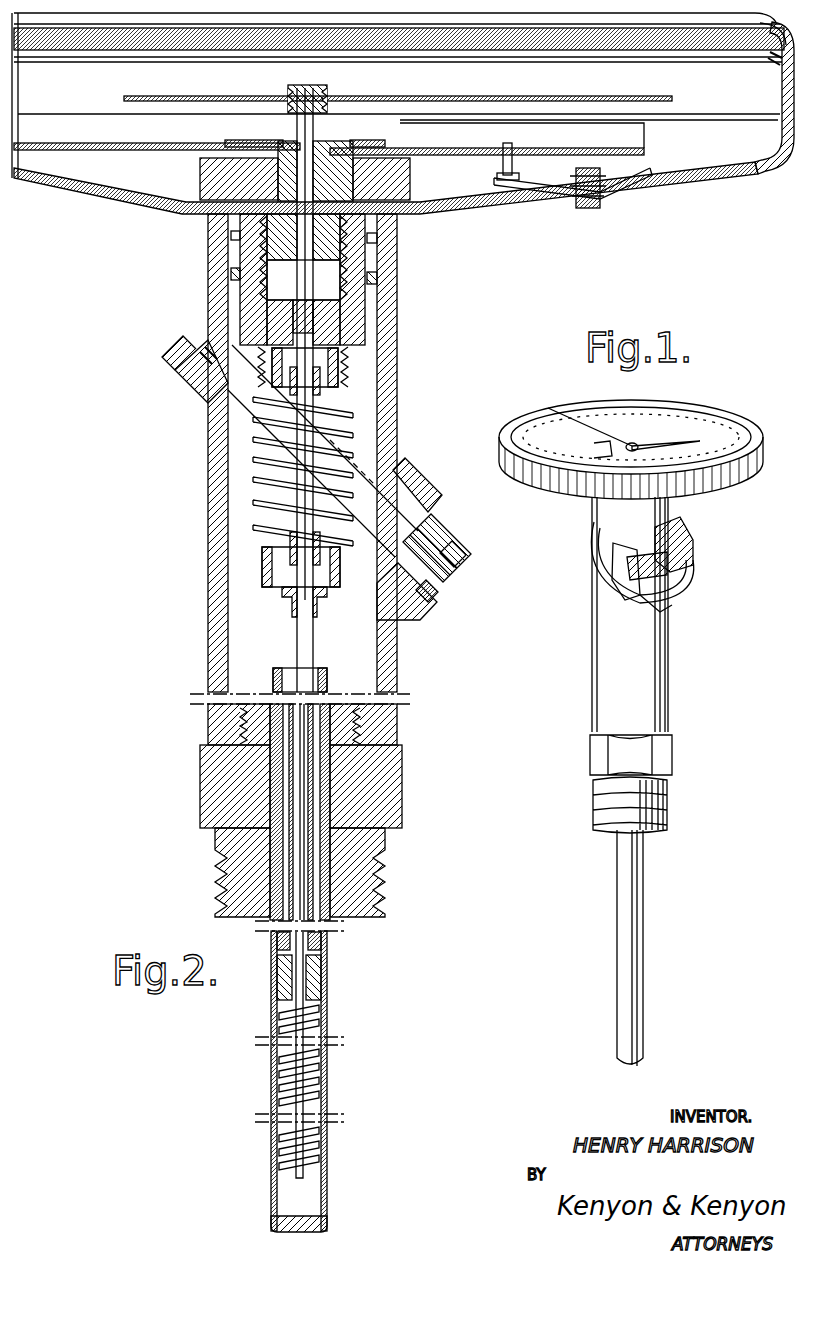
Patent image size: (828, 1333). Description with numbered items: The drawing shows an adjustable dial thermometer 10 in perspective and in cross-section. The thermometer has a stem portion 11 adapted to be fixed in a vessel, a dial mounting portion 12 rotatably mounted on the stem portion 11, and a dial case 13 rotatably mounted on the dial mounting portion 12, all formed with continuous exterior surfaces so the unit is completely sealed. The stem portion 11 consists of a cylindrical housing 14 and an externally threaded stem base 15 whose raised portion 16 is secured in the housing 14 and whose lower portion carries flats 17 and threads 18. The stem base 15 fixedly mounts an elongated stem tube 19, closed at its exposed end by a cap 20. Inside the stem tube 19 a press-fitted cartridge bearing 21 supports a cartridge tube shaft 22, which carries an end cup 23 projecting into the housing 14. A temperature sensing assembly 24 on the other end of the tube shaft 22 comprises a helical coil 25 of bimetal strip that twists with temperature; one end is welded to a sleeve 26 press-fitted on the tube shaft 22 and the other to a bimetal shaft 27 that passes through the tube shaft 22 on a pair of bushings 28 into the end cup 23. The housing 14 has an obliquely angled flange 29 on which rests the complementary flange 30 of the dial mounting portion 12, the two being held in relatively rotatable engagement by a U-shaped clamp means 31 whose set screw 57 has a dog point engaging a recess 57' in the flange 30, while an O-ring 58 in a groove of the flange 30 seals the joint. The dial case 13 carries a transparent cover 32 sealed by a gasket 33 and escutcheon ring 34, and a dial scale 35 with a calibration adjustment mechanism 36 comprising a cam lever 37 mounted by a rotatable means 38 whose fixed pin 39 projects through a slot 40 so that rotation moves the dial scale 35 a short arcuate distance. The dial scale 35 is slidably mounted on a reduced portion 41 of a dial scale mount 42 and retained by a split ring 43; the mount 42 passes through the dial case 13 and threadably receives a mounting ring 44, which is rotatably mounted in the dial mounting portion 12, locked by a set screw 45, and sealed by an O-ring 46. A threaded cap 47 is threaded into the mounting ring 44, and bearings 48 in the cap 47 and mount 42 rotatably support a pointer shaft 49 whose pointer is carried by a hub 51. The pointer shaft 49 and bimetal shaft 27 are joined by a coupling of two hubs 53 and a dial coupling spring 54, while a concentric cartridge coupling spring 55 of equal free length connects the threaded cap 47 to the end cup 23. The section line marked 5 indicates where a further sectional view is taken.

In FIG. 1, the adjustable dial thermometer 10 is at (588, 637).
In FIG. 2, the stem portion 11 is at (180, 648).
In FIG. 1, the stem portion 11 is at (590, 680).
In FIG. 2, the dial mounting portion 12 is at (198, 263).
In FIG. 1, the dial mounting portion 12 is at (654, 523).
In FIG. 2, the dial case 13 is at (78, 202).
In FIG. 1, the dial case 13 is at (729, 488).
In FIG. 2, the cylindrical housing 14 is at (216, 549).
In FIG. 2, the stem base 15 is at (207, 769).
In FIG. 2, the raised portion 16 is at (340, 718).
In FIG. 1, the flats 17 is at (602, 754).
In FIG. 2, the threads 18 is at (216, 873).
In FIG. 1, the threads 18 is at (667, 811).
In FIG. 2, the stem tube 19 is at (270, 951).
In FIG. 2, the cap 20 is at (272, 1223).
In FIG. 2, the cartridge bearing 21 is at (283, 673).
In FIG. 2, the cartridge tube shaft 22 is at (308, 951).
In FIG. 2, the end cup 23 is at (330, 596).
In FIG. 2, the temperature sensing assembly 24 is at (286, 1166).
In FIG. 2, the helical coil 25 is at (308, 1028).
In FIG. 2, the sleeve 26 is at (311, 978).
In FIG. 2, the bimetal shaft 27 is at (300, 1061).
In FIG. 2, the bushings 28 is at (293, 588).
In FIG. 2, the flange 29 is at (168, 343).
In FIG. 1, the flange 29 is at (670, 623).
In FIG. 2, the flange 30 is at (198, 338).
In FIG. 1, the flange 30 is at (680, 594).
In FIG. 2, the clamp means 31 is at (431, 508).
In FIG. 1, the clamp means 31 is at (681, 541).
In FIG. 2, the transparent cover 32 is at (666, 32).
In FIG. 2, the gasket 33 is at (772, 62).
In FIG. 2, the escutcheon ring 34 is at (772, 22).
In FIG. 2, the dial scale 35 is at (116, 150).
In FIG. 2, the calibration adjustment mechanism 36 is at (603, 218).
In FIG. 2, the cam lever 37 is at (524, 188).
In FIG. 2, the rotatable means 38 is at (606, 208).
In FIG. 2, the fixed pin 39 is at (502, 158).
In FIG. 2, the slot 40 is at (551, 156).
In FIG. 2, the reduced portion 41 is at (318, 134).
In FIG. 2, the dial scale mount 42 is at (200, 181).
In FIG. 2, the split ring 43 is at (270, 148).
In FIG. 2, the mounting ring 44 is at (368, 323).
In FIG. 2, the set screw 45 is at (390, 242).
In FIG. 2, the O-ring 46 is at (378, 279).
In FIG. 2, the threaded cap 47 is at (278, 312).
In FIG. 2, the bearing 48 is at (300, 142).
In FIG. 2, the pointer shaft 49 is at (297, 265).
In FIG. 2, the hub 51 is at (313, 136).
In FIG. 2, the hubs 53 is at (321, 387).
In FIG. 2, the dial coupling spring 54 is at (282, 503).
In FIG. 2, the cartridge coupling spring 55 is at (268, 478).
In FIG. 2, the set screw 57 is at (442, 535).
In FIG. 1, the set screw 57 is at (700, 553).
In FIG. 2, the recess 57' is at (471, 559).
In FIG. 2, the O-ring 58 is at (438, 596).
In FIG. 2, the section line 5 is at (163, 108).